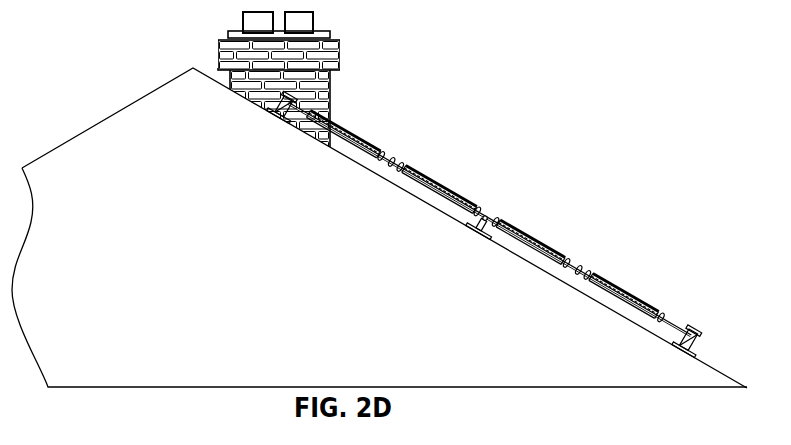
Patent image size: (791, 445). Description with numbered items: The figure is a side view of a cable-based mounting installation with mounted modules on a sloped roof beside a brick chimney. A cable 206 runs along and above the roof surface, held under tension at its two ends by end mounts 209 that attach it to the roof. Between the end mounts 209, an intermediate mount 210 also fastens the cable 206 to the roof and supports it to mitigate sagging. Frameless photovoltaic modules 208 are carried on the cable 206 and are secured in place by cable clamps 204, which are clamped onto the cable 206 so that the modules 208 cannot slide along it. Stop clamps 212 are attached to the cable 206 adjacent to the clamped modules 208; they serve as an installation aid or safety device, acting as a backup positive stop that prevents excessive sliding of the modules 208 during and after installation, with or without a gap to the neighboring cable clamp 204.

The cable clamp 204 is at (449, 219).
The cable 206 is at (483, 214).
The frameless photovoltaic module 208 is at (485, 210).
The end mount 209 is at (438, 236).
The intermediate mount 210 is at (425, 241).
The stop clamp 212 is at (485, 237).